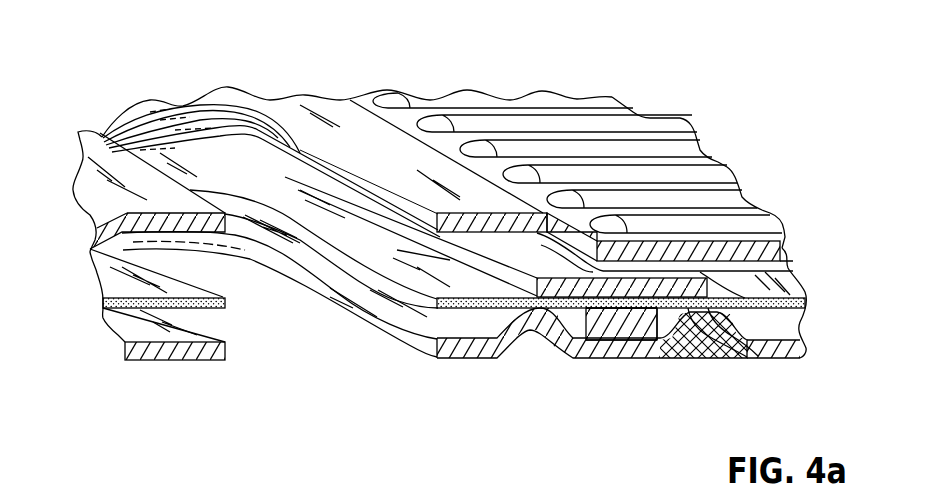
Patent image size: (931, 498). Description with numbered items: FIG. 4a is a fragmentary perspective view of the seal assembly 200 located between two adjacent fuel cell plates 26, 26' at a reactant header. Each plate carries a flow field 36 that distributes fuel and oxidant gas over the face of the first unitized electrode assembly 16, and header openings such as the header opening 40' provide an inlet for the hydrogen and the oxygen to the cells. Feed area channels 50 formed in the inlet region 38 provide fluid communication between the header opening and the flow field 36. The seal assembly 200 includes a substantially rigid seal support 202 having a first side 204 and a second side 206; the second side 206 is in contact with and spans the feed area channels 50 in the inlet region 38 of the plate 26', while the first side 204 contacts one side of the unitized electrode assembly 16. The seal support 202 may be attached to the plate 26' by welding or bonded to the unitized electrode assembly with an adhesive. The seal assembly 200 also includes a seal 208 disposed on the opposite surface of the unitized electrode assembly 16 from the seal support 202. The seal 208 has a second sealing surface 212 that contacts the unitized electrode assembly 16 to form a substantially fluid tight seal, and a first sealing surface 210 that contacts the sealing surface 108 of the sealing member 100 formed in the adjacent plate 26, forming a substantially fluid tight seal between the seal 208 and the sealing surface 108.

The inlet region 38 is at (583, 87).
The flow field 36 is at (627, 147).
The fuel cell plate 26' is at (695, 184).
The feed area channels 50 is at (567, 252).
The first unitized electrode assembly 16 is at (803, 300).
The seal assembly 200 is at (462, 312).
The sealing member 100 is at (513, 355).
The fuel cell plate 26 is at (801, 303).
The second side 206 is at (760, 313).
The seal support 202 is at (687, 310).
The first side 204 is at (730, 317).
The seal 208 is at (598, 326).
The sealing surface 108 is at (573, 357).
The first sealing surface 210 is at (645, 318).
The second sealing surface 212 is at (655, 312).
The header opening 40' is at (184, 393).